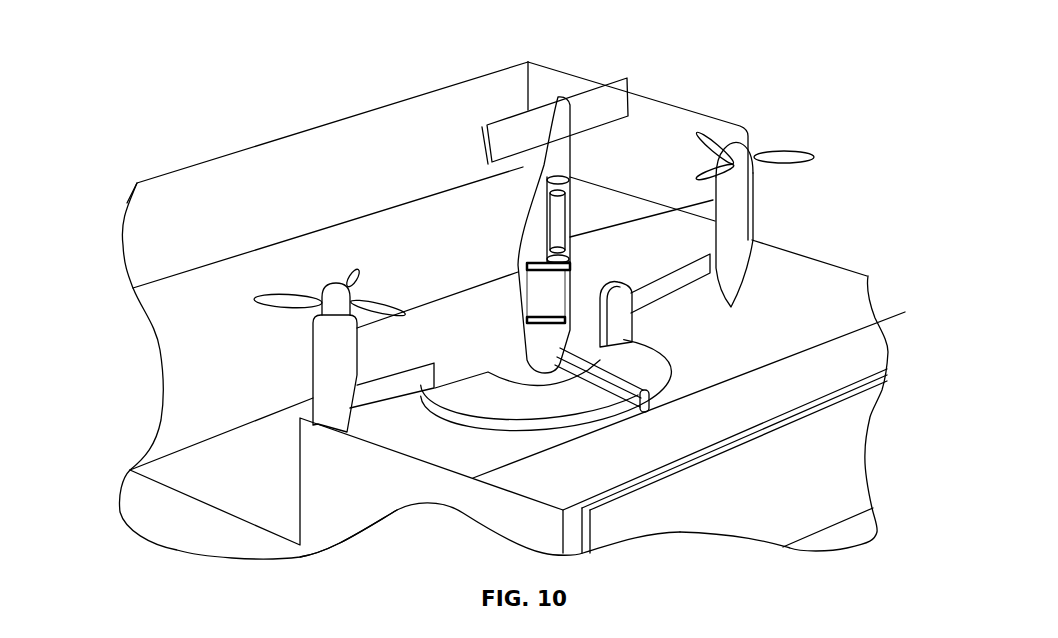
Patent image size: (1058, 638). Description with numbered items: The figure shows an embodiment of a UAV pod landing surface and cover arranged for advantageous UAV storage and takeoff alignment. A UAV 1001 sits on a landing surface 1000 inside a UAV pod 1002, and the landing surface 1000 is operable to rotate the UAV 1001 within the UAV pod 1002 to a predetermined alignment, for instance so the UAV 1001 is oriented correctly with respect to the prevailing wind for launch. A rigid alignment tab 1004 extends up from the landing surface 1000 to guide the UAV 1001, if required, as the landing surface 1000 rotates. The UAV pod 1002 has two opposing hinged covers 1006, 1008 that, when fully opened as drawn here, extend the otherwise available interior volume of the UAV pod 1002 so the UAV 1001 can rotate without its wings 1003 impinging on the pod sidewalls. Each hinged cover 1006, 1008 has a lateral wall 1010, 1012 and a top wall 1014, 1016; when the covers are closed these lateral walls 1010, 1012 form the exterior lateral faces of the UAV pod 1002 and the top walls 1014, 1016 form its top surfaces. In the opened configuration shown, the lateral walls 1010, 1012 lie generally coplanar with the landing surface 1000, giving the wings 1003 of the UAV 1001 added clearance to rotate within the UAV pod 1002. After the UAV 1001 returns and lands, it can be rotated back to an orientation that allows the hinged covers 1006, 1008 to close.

The landing surface 1000 is at (643, 362).
The UAV 1001 is at (538, 175).
The UAV pod 1002 is at (585, 75).
The wings 1003 is at (428, 323).
The rigid alignment tab 1004 is at (622, 325).
The hinged cover 1006 is at (250, 146).
The hinged cover 1008 is at (355, 488).
The lateral wall 1010 is at (187, 383).
The lateral wall 1012 is at (858, 357).
The top wall 1014 is at (235, 187).
The top wall 1016 is at (780, 420).